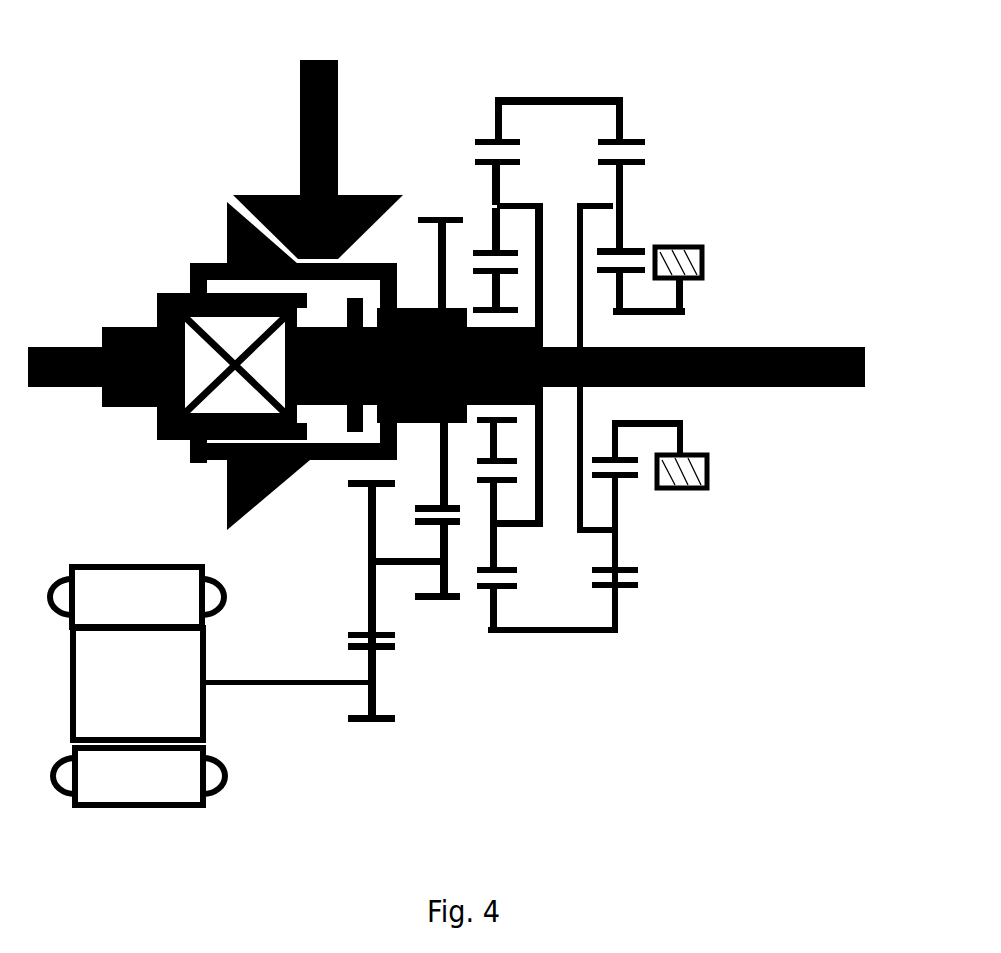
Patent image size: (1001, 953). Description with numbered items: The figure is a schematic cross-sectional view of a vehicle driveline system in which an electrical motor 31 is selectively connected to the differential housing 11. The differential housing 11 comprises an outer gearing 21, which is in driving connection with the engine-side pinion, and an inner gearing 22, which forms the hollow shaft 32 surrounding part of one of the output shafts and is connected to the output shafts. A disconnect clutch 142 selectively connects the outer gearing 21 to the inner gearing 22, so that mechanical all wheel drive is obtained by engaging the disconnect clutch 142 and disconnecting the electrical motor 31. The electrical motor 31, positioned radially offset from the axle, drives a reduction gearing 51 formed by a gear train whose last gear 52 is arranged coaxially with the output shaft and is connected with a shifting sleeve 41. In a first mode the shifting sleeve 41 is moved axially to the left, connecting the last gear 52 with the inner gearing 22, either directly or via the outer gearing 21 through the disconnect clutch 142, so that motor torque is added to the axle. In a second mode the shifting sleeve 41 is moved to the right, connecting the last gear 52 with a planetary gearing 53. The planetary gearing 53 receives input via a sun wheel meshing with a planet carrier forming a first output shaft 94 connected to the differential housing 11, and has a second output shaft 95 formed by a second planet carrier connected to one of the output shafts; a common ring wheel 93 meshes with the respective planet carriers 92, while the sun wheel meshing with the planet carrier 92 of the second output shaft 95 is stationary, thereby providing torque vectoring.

The differential housing 11 is at (169, 244).
The outer gearing 21 is at (228, 213).
The inner gearing 22 is at (160, 420).
The electrical motor 31 is at (80, 567).
The hollow shaft 32 is at (330, 403).
The shifting sleeve 41 is at (423, 302).
The reduction gearing 51 is at (411, 638).
The last gear 52 is at (437, 217).
The planetary gearing 53 is at (666, 555).
The planet carriers 92 is at (493, 205).
The common ring wheel 93 is at (558, 96).
The first output shaft 94 is at (520, 205).
The second output shaft 95 is at (602, 203).
The disconnect clutch 142 is at (190, 279).